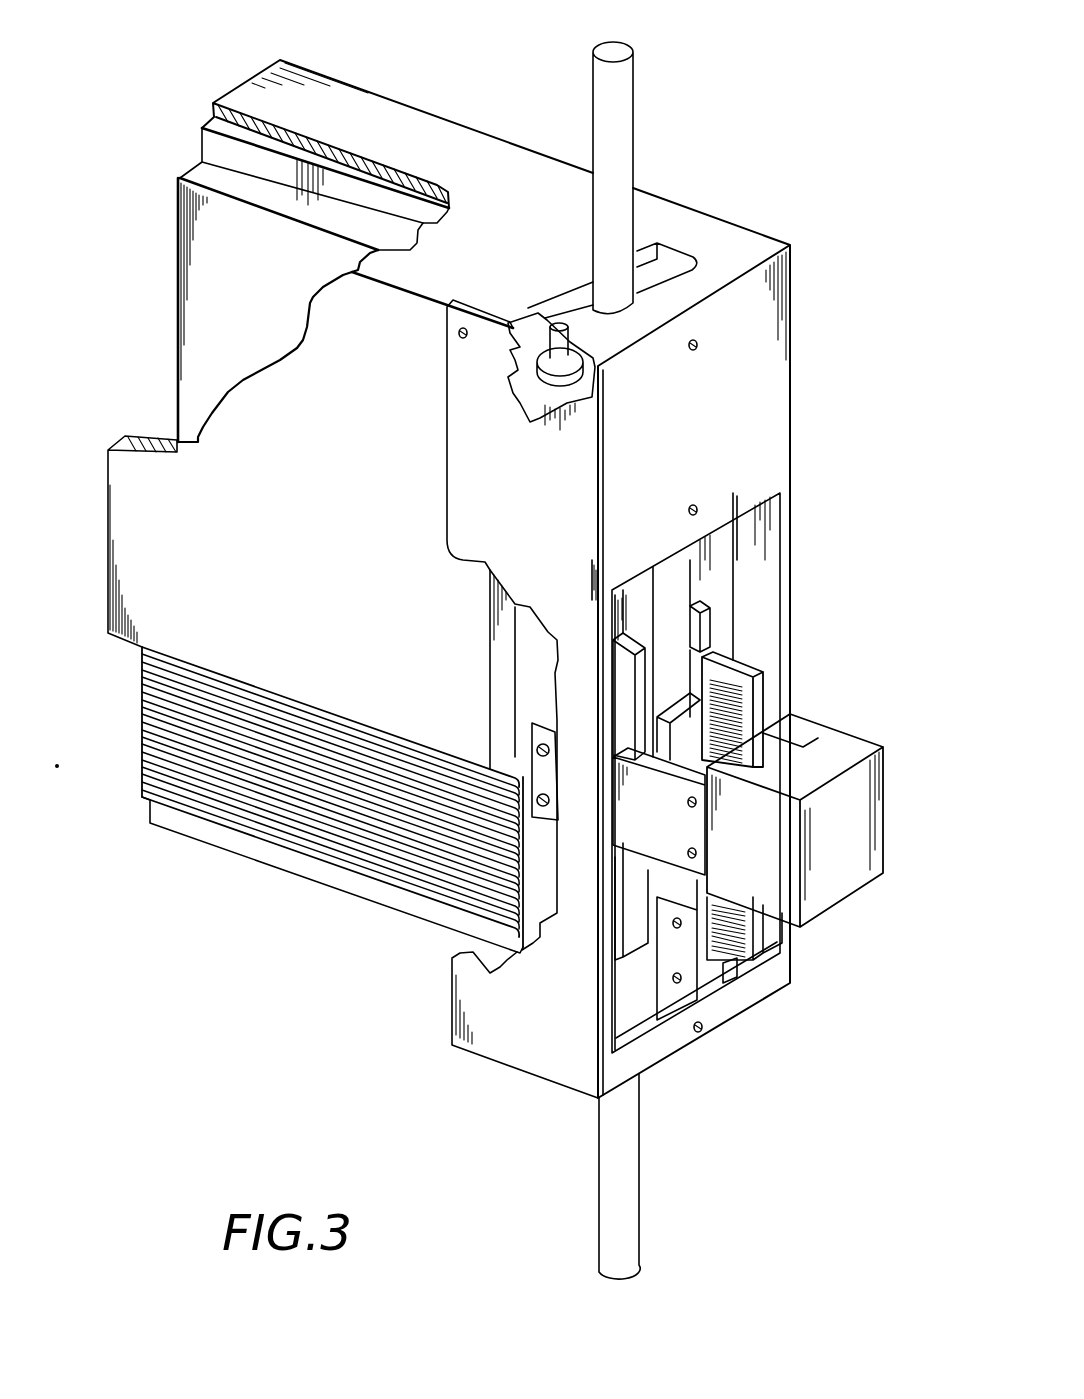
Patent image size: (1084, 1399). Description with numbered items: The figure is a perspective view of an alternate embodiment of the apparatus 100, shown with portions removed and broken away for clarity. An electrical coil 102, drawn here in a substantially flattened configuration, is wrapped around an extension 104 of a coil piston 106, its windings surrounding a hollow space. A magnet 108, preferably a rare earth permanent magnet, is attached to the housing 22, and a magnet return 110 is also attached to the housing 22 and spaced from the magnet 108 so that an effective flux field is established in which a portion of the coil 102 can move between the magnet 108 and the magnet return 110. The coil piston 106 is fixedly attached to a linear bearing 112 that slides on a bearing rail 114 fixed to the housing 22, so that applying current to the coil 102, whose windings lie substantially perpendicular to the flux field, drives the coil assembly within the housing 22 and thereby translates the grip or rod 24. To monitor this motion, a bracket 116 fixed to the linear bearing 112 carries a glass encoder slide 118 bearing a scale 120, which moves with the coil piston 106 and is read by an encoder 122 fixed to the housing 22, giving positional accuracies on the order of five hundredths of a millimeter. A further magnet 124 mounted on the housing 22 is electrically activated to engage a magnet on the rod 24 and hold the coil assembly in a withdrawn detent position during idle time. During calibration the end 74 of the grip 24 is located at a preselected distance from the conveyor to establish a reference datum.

The housing 22 is at (368, 120).
The grip/rod 24 is at (630, 100).
The end of grip 74 is at (615, 1280).
The apparatus 100 is at (786, 192).
The electrical coil 102 is at (237, 798).
The extension 104 is at (355, 886).
The coil piston 106 is at (535, 672).
The magnet 108 is at (239, 263).
The magnet return 110 is at (272, 461).
The linear bearing 112 is at (707, 622).
The bearing rail 114 is at (678, 575).
The bracket 116 is at (643, 837).
The glass encoder slide 118 is at (758, 690).
The scale 120 is at (733, 930).
The encoder 122 is at (827, 887).
The magnet 124 is at (550, 377).